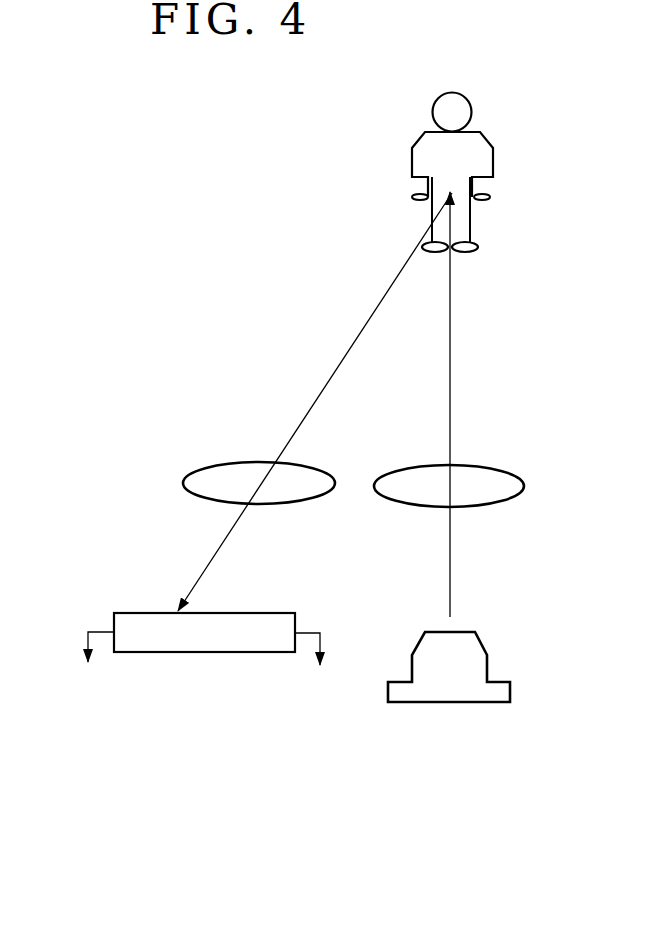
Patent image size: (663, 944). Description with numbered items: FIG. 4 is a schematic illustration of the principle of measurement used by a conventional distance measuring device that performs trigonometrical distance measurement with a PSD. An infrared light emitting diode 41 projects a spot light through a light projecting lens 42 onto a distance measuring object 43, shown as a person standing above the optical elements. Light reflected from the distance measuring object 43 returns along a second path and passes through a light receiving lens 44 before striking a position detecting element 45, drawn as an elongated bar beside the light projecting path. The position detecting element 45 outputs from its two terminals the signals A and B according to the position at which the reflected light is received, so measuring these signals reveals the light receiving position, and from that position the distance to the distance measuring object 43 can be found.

The infrared light emitting diode 41 is at (465, 650).
The light projecting lens 42 is at (492, 480).
The distance measuring object 43 is at (422, 160).
The light receiving lens 44 is at (230, 473).
The position detecting element 45 is at (200, 642).